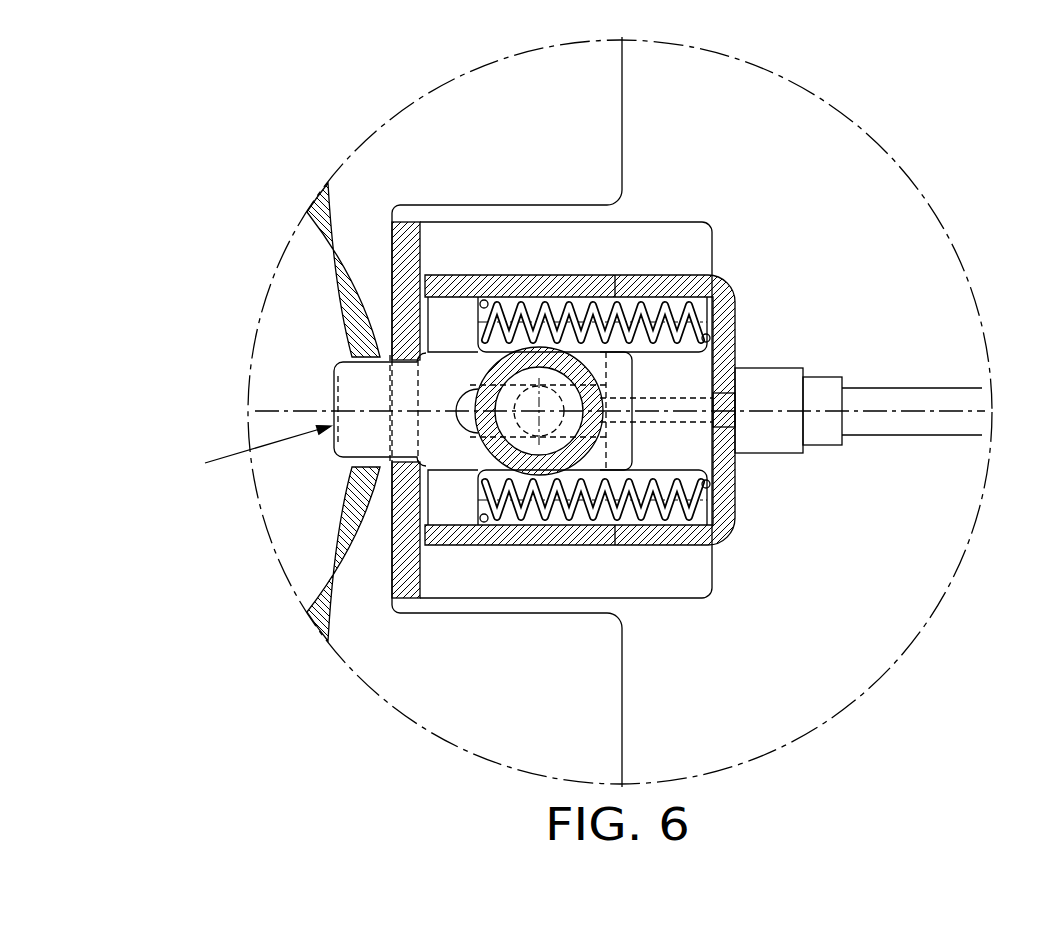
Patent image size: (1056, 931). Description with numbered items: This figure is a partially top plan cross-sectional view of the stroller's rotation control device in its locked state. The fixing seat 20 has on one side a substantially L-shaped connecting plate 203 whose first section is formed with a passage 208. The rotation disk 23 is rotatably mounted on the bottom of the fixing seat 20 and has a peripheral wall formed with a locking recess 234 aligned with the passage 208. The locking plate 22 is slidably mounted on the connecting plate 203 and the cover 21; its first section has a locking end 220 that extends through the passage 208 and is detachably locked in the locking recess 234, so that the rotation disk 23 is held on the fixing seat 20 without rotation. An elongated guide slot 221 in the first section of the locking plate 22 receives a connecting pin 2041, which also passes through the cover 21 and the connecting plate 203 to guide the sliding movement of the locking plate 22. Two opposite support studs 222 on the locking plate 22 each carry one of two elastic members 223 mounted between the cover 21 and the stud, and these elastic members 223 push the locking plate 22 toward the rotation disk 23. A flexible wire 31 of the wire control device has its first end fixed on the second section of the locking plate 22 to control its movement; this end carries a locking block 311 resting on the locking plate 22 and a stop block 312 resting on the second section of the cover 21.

The fixing seat 20 is at (605, 127).
The locking plate 22 is at (443, 440).
The connecting plate 203 is at (688, 242).
The elastic members 223 is at (717, 297).
The connecting pin 2041 is at (532, 418).
The support studs 222 is at (452, 325).
The cover 21 is at (668, 535).
The locking block 311 is at (568, 420).
The guide slot 221 is at (468, 422).
The stop block 312 is at (783, 388).
The flexible wire 31 is at (937, 397).
The rotation disk 23 is at (295, 287).
The locking end 220 is at (414, 366).
The passage 208 is at (352, 402).
The locking recess 234 is at (238, 457).